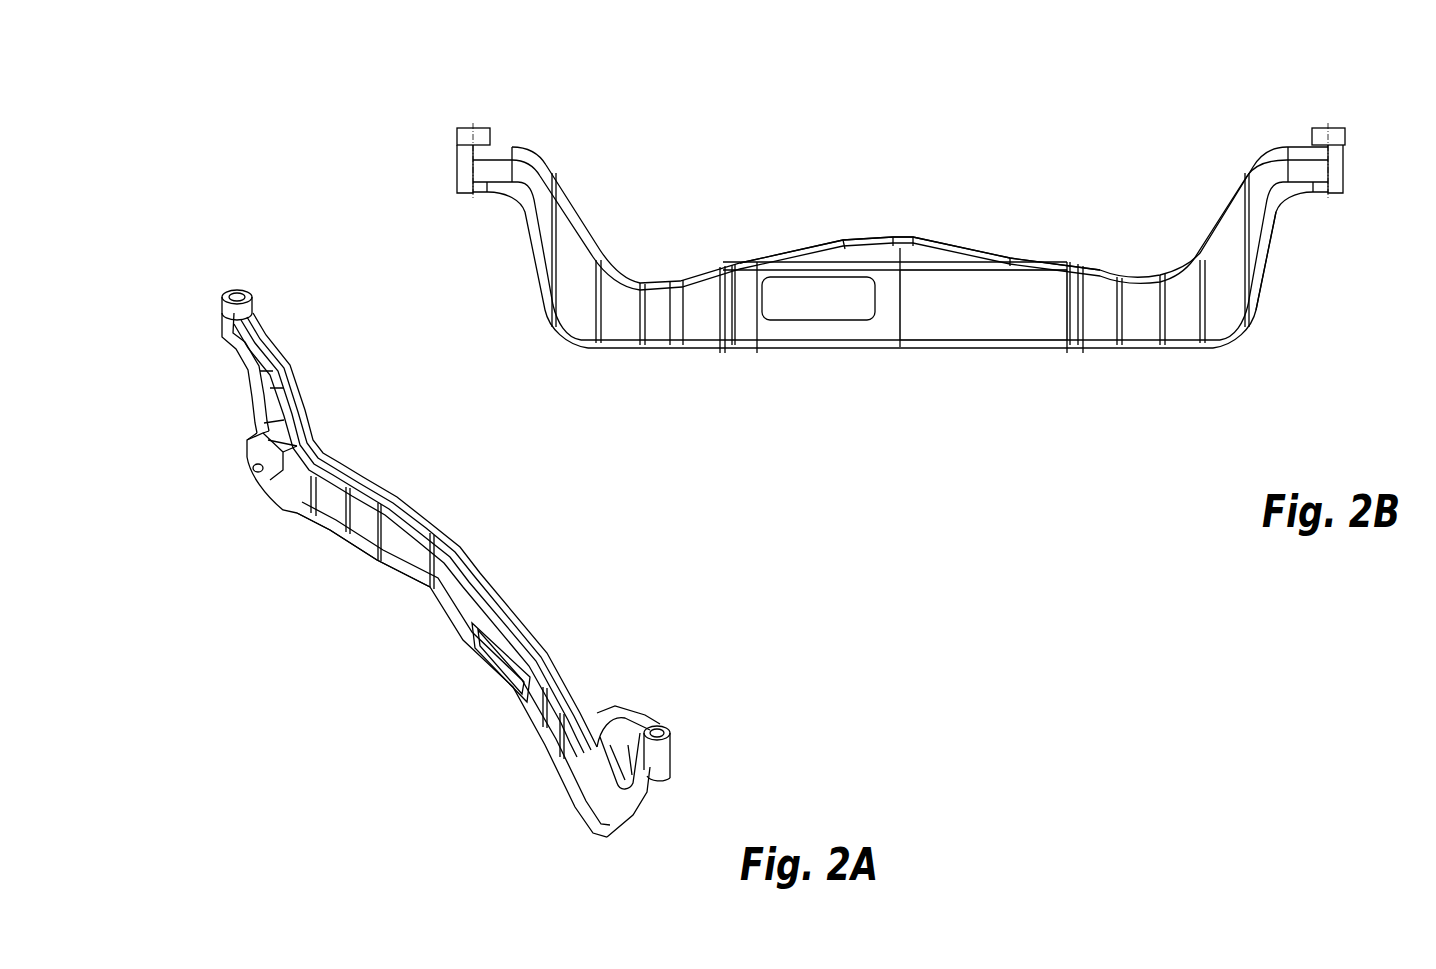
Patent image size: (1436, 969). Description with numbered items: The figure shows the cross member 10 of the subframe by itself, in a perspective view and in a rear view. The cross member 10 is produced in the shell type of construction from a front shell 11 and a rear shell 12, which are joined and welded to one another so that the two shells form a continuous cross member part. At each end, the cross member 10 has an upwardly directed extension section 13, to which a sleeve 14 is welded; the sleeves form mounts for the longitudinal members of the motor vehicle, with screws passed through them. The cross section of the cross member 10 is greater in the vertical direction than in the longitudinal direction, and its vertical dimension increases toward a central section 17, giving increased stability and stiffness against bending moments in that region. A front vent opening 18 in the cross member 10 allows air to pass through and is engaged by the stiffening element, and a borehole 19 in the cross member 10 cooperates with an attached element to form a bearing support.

In FIG. 2B, the cross member 10 is at (762, 227).
In FIG. 2A, the cross member 10 is at (489, 532).
In FIG. 2A, the front shell 11 is at (394, 563).
In FIG. 2B, the rear shell 12 is at (983, 305).
In FIG. 2A, the rear shell 12 is at (568, 667).
In FIG. 2B, the extension section 13 is at (1283, 254).
In FIG. 2B, the sleeve 14 is at (452, 159).
In FIG. 2B, the central section 17 is at (1002, 239).
In FIG. 2B, the front vent opening 18 is at (818, 298).
In FIG. 2A, the borehole 19 is at (251, 469).